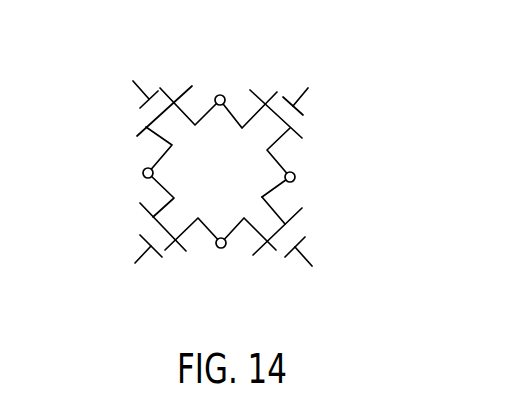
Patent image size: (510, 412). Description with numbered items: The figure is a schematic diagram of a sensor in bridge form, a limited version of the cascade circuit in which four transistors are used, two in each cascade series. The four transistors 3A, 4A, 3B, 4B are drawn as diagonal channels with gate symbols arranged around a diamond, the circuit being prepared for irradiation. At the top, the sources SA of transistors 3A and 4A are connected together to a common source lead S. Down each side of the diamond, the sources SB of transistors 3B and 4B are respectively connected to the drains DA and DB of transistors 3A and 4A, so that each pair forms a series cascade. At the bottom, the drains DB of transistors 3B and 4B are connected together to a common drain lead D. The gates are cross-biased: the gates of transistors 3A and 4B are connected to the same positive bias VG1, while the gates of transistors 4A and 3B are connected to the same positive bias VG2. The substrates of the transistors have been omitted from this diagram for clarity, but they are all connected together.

The transistor 3A is at (171, 96).
The transistor 4A is at (290, 97).
The transistor 3B is at (152, 217).
The transistor 4B is at (300, 214).
The source SA is at (242, 126).
The common source lead S is at (221, 95).
The common drain lead D is at (225, 267).
The drain DA is at (176, 203).
The drain DB is at (268, 150).
The source SB is at (275, 211).
The positive bias VG1 is at (232, 183).
The positive bias VG2 is at (237, 182).